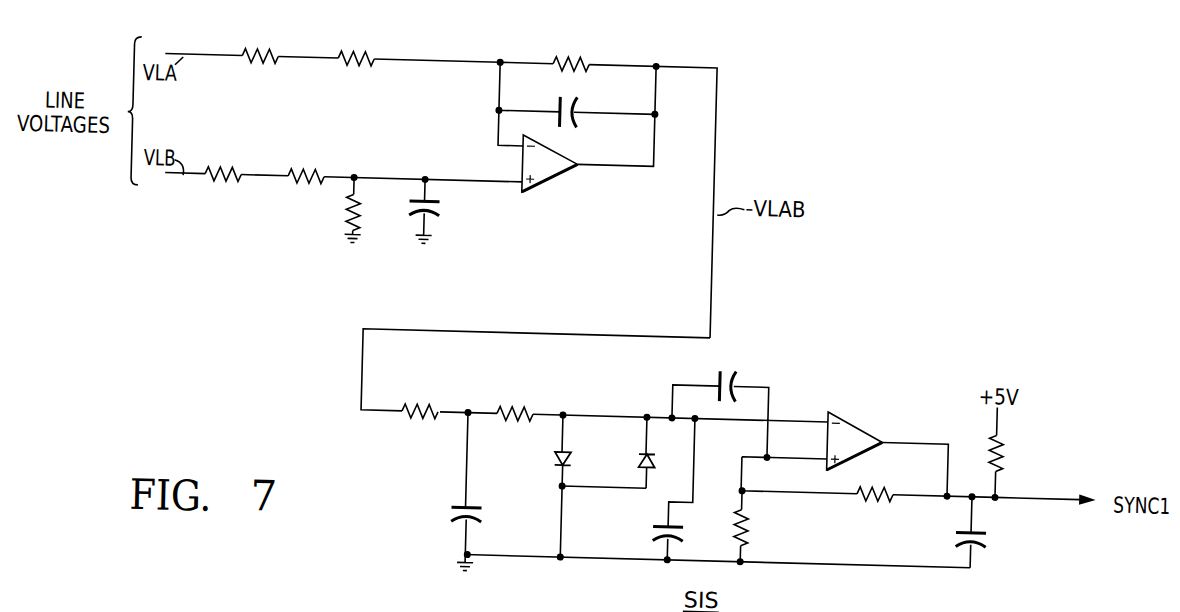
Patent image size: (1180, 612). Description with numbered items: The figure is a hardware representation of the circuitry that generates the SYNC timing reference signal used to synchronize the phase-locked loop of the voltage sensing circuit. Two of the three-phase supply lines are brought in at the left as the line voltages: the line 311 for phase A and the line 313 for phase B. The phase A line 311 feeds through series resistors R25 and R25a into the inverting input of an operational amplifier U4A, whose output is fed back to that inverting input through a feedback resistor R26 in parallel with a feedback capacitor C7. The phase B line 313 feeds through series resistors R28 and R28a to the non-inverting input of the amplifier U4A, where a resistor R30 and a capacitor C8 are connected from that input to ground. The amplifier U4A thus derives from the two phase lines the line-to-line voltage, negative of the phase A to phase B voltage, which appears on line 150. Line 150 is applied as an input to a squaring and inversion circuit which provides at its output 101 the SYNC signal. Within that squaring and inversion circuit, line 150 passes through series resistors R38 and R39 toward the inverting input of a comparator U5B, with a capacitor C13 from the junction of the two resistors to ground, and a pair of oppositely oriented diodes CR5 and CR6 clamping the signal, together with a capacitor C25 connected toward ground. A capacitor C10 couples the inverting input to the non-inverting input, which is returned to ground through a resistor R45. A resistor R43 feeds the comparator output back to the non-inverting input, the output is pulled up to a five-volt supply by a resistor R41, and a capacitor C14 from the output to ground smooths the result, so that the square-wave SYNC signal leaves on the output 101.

The line for phase A 311 is at (206, 67).
The line for phase B 313 is at (187, 189).
The line carrying line-to-line voltage -VAB 150 is at (364, 366).
The output line for SYNC signal 101 is at (1037, 491).
The resistor R25 is at (241, 59).
The resistor R25a is at (366, 54).
The feedback resistor R26 is at (579, 56).
The feedback capacitor C7 is at (574, 100).
The operational amplifier U4A is at (542, 182).
The resistor R28 is at (229, 175).
The resistor R28a is at (304, 171).
The resistor R30 is at (343, 219).
The capacitor C8 is at (438, 216).
The resistor R38 is at (428, 409).
The resistor R39 is at (520, 407).
The capacitor C13 is at (458, 516).
The diode CR5 is at (557, 456).
The diode CR6 is at (639, 461).
The capacitor C10 is at (724, 367).
The capacitor C25 is at (661, 532).
The comparator U5B is at (868, 419).
The feedback resistor R43 is at (882, 478).
The resistor R45 is at (763, 526).
The capacitor C14 is at (956, 531).
The pull-up resistor R41 is at (1009, 429).